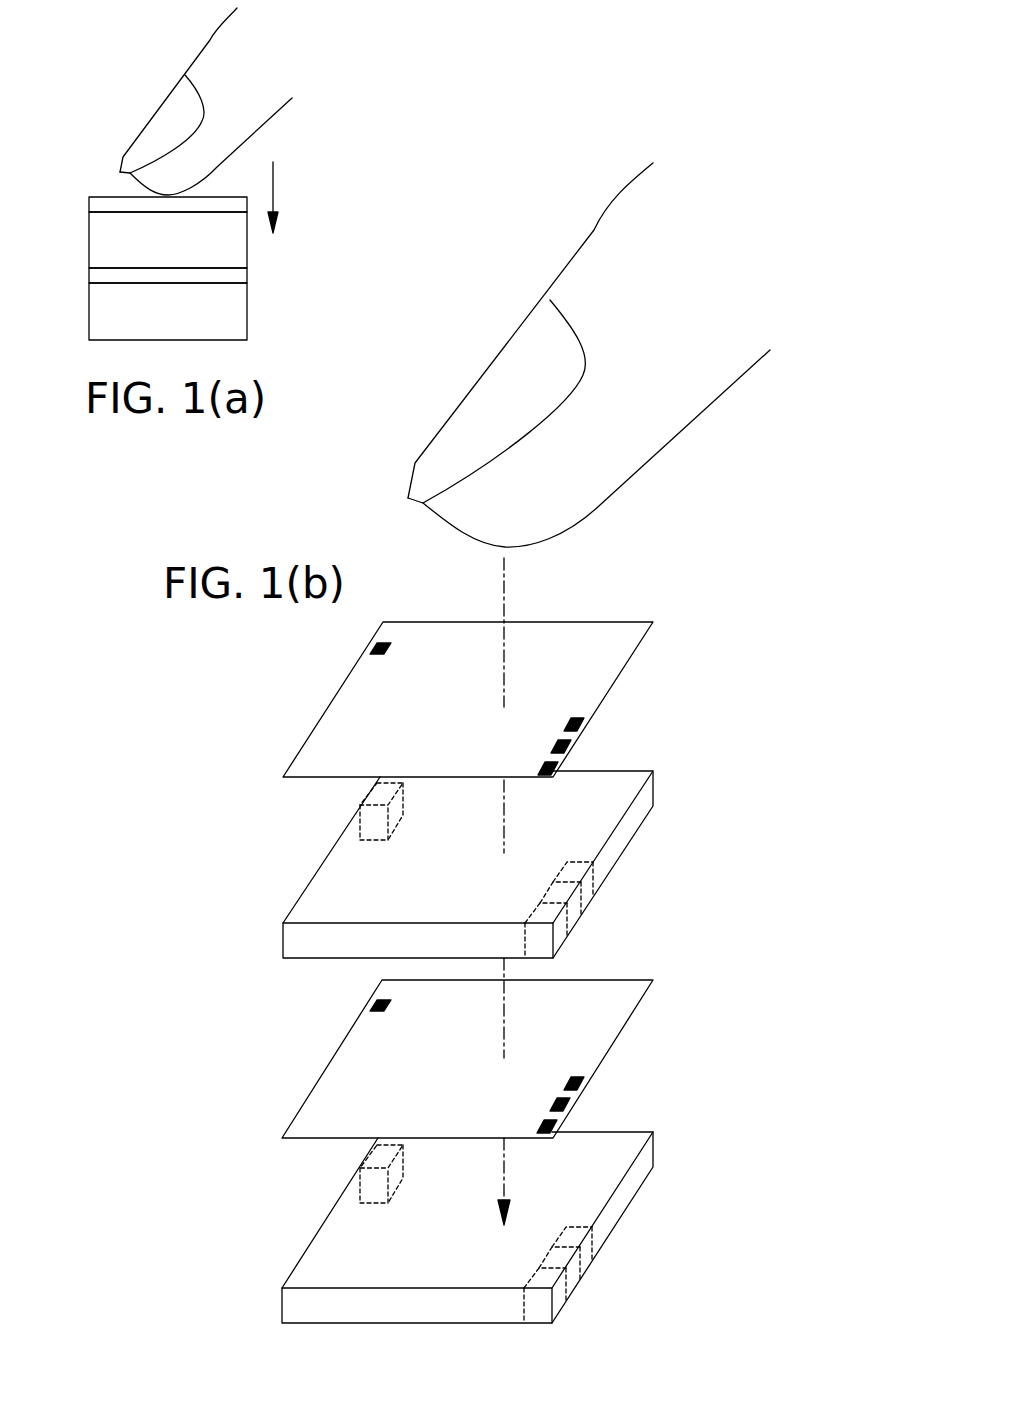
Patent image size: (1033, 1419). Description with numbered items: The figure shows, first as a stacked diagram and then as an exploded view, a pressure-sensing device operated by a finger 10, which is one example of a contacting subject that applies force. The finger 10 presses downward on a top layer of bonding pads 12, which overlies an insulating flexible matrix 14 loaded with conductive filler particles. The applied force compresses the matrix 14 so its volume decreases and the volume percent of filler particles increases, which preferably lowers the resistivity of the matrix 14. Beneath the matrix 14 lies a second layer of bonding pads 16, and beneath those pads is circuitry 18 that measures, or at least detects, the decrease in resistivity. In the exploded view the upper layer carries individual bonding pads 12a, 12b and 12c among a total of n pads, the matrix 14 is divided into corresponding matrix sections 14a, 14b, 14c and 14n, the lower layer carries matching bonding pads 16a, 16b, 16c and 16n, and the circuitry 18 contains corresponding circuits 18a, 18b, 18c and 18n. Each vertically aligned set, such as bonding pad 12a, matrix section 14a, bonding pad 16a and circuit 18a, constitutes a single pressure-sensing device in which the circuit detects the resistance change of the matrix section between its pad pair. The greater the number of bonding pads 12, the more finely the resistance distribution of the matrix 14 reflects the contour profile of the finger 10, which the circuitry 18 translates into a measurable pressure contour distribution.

In FIG. 1A, the finger 10 is at (203, 52).
In FIG. 1B, the finger 10 is at (577, 258).
In FIG. 1A, the bonding pads 12 is at (89, 201).
In FIG. 1B, the bonding pads 12 is at (319, 721).
In FIG. 1B, the bonding pad 12a is at (558, 769).
In FIG. 1B, the bonding pad 12b is at (571, 746).
In FIG. 1B, the bonding pad 12c is at (583, 724).
In FIG. 1A, the insulating flexible matrix 14 is at (89, 237).
In FIG. 1B, the insulating flexible matrix 14 is at (283, 942).
In FIG. 1B, the matrix section 14a is at (562, 927).
In FIG. 1B, the matrix section 14b is at (573, 906).
In FIG. 1B, the matrix section 14c is at (590, 880).
In FIG. 1B, the matrix section 14n is at (370, 790).
In FIG. 1A, the bonding pads 16 is at (89, 272).
In FIG. 1B, the bonding pads 16 is at (307, 1101).
In FIG. 1B, the bonding pad 16a is at (557, 1127).
In FIG. 1B, the bonding pad 16b is at (570, 1105).
In FIG. 1B, the bonding pad 16c is at (583, 1083).
In FIG. 1B, the bonding pad 16n is at (372, 1003).
In FIG. 1A, the circuitry 18 is at (89, 314).
In FIG. 1B, the circuitry 18 is at (282, 1306).
In FIG. 1B, the circuit 18a is at (562, 1292).
In FIG. 1B, the circuit 18b is at (573, 1270).
In FIG. 1B, the circuit 18c is at (588, 1245).
In FIG. 1B, the circuit 18n is at (370, 1152).